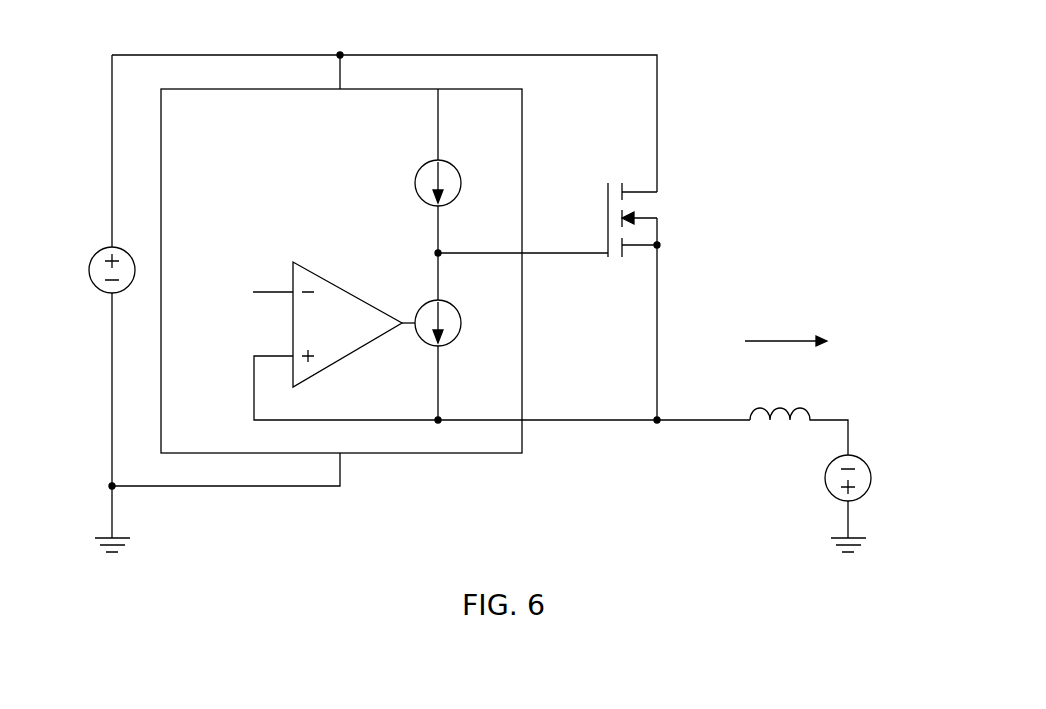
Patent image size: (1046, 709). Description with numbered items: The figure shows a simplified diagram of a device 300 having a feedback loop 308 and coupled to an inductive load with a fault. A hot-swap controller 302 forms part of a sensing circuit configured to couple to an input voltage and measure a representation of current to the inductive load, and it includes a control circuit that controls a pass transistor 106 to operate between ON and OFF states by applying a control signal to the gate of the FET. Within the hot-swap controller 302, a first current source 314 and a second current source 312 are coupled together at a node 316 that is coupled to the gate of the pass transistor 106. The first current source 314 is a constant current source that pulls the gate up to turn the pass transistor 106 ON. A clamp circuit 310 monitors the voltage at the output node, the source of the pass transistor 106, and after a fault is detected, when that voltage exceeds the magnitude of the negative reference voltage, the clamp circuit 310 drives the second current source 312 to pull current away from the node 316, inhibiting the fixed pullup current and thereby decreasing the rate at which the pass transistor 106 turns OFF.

The device 300 is at (773, 63).
The hot-swap controller 302 is at (522, 124).
The first current source 314 is at (453, 166).
The node 316 is at (441, 251).
The second current source 312 is at (455, 309).
The clamp circuit 310 is at (348, 355).
The feedback loop 308 is at (341, 423).
The pass transistor 106 is at (638, 189).